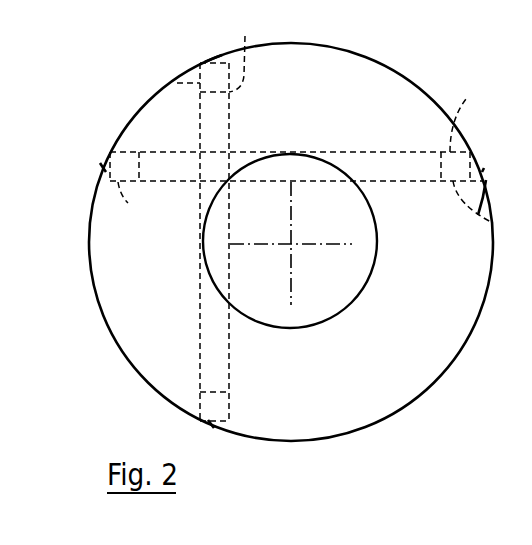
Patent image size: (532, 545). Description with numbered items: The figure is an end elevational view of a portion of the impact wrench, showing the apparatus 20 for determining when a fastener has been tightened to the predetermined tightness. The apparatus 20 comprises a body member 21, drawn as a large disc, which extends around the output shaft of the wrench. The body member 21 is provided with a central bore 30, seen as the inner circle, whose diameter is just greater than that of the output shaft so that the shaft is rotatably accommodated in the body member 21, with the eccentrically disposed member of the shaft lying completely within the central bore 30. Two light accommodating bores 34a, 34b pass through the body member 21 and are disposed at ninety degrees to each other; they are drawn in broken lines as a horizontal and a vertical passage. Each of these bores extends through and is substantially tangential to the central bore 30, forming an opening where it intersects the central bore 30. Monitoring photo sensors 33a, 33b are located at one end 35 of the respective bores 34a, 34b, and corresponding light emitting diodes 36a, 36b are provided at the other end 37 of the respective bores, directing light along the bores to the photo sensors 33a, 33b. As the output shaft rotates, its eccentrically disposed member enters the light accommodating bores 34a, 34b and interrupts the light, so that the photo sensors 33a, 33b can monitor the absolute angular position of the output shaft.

The apparatus 20 is at (415, 73).
The body member 21 is at (478, 193).
The central bore 30 is at (374, 262).
The monitoring photo sensor 33a is at (492, 209).
The monitoring photo sensor 33b is at (218, 405).
The light accommodating bore 34a is at (469, 129).
The light accommodating bore 34b is at (242, 51).
The end of bore 35 is at (476, 161).
The light emitting diode 36a is at (143, 187).
The light emitting diode 36b is at (173, 83).
The other end of bore 37 is at (215, 58).